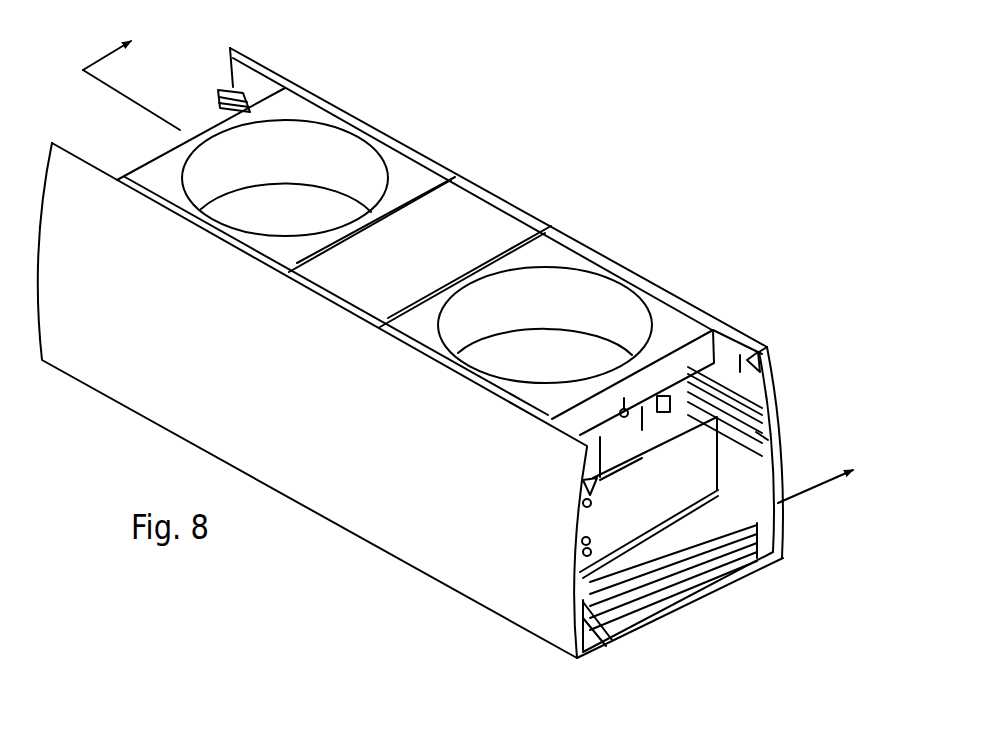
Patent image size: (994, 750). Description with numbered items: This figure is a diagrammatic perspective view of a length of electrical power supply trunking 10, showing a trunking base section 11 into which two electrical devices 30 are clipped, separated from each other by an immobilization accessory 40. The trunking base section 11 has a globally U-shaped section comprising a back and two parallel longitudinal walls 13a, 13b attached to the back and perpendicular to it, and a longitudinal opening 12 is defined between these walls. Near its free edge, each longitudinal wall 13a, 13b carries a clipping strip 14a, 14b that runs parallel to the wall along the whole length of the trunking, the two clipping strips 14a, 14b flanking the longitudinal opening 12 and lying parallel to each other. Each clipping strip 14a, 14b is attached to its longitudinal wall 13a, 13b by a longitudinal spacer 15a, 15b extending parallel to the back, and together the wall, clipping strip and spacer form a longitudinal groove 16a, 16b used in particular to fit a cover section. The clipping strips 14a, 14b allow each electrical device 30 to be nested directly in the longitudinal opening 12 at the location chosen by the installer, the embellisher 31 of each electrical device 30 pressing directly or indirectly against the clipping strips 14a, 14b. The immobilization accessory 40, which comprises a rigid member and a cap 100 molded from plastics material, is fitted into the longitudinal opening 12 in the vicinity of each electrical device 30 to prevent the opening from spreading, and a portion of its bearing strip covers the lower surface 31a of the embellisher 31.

The electrical power supply trunking 10 is at (662, 637).
The trunking base section 11 is at (712, 590).
The longitudinal opening 12 is at (200, 112).
The longitudinal wall 13a is at (778, 510).
The longitudinal wall 13b is at (496, 588).
The clipping strip 14a is at (752, 394).
The clipping strip 14b is at (606, 486).
The longitudinal spacer 15a is at (770, 426).
The longitudinal spacer 15b is at (582, 503).
The longitudinal groove 16a is at (738, 371).
The longitudinal groove 16b is at (580, 478).
The electrical device 30 is at (314, 103).
The embellisher 31 is at (430, 178).
The lower surface 31a is at (624, 408).
The immobilization accessory 40 is at (538, 222).
The cap 100 is at (500, 227).